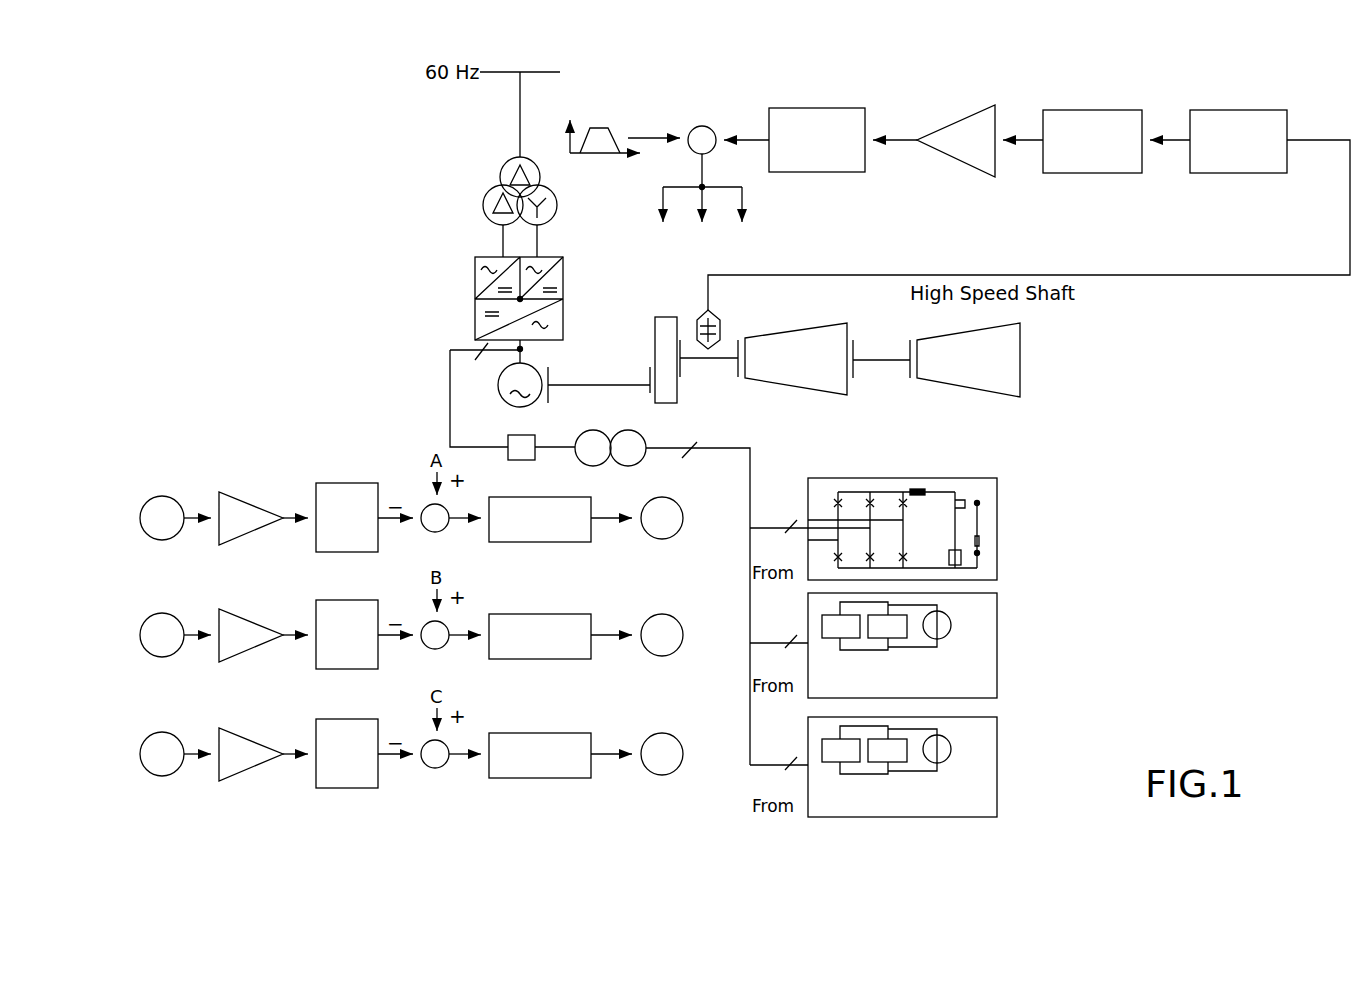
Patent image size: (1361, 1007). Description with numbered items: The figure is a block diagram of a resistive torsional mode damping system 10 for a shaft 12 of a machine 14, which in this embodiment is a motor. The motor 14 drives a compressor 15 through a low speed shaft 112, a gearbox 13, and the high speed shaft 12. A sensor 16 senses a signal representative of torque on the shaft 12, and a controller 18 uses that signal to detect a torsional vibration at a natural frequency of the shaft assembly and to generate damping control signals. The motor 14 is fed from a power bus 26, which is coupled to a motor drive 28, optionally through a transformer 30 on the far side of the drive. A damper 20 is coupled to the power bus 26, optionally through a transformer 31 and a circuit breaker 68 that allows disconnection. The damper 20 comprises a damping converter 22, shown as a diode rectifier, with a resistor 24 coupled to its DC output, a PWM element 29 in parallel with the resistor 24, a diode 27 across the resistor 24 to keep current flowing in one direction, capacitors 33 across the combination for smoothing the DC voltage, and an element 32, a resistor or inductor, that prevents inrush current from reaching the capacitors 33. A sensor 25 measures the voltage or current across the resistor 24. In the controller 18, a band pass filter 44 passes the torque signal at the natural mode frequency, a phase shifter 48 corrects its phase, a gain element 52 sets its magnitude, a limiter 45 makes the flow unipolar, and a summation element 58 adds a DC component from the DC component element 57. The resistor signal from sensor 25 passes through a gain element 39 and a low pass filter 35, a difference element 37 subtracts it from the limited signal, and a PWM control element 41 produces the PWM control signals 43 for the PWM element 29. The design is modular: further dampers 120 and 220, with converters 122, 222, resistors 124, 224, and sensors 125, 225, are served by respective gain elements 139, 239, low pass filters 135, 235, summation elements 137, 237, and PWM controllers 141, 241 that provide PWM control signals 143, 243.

The resistive torsional mode damping system 10 is at (1122, 669).
The shaft 12 is at (695, 370).
The gearbox 13 is at (665, 316).
The machine 14 is at (506, 403).
The compressor 15 is at (806, 369).
The sensor 16 is at (713, 312).
The controller 18 is at (826, 250).
The damper 20 is at (997, 572).
The damping converter 22 is at (898, 552).
The resistor 24 is at (963, 507).
The sensor 25 is at (178, 539).
The power bus 26 is at (495, 90).
The diode 27 is at (979, 505).
The motor drive 28 is at (465, 286).
The PWM element 29 is at (947, 551).
The transformer 30 is at (480, 175).
The transformer 31 is at (647, 431).
The element 32 is at (925, 492).
The capacitor 33 is at (979, 541).
The low pass filter 35 is at (353, 553).
The difference element 37 is at (441, 533).
The gain element 39 is at (258, 533).
The PWM control element 41 is at (533, 543).
The PWM control signals 43 is at (684, 514).
The band pass filter 44 is at (1240, 109).
The limiter 45 is at (818, 107).
The phase shifter 48 is at (1092, 109).
The gain element 52 is at (960, 118).
The DC component element 57 is at (604, 112).
The summation element 58 is at (702, 124).
The circuit breaker 68 is at (536, 442).
The low speed shaft 112 is at (614, 370).
The damper 120 is at (992, 669).
The converter 122 is at (841, 626).
The resistor 124 is at (887, 626).
The sensor 125 is at (178, 656).
The low pass filter 135 is at (353, 670).
The summation element 137 is at (450, 626).
The gain element 139 is at (258, 650).
The PWM controller 141 is at (533, 660).
The PWM control signals 143 is at (684, 632).
The damper 220 is at (992, 793).
The converter 222 is at (841, 750).
The resistor 224 is at (887, 750).
The sensor 225 is at (178, 775).
The low pass filter 235 is at (353, 789).
The summation element 237 is at (450, 745).
The gain element 239 is at (258, 769).
The PWM controller 241 is at (533, 779).
The PWM control signals 243 is at (684, 750).